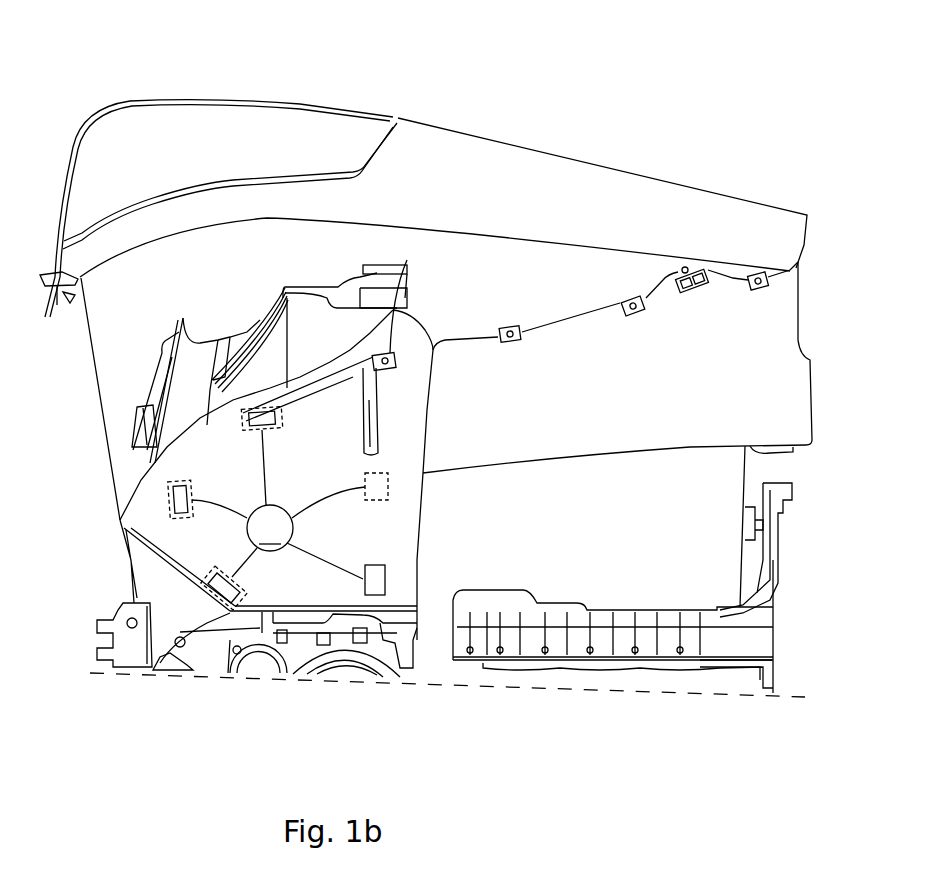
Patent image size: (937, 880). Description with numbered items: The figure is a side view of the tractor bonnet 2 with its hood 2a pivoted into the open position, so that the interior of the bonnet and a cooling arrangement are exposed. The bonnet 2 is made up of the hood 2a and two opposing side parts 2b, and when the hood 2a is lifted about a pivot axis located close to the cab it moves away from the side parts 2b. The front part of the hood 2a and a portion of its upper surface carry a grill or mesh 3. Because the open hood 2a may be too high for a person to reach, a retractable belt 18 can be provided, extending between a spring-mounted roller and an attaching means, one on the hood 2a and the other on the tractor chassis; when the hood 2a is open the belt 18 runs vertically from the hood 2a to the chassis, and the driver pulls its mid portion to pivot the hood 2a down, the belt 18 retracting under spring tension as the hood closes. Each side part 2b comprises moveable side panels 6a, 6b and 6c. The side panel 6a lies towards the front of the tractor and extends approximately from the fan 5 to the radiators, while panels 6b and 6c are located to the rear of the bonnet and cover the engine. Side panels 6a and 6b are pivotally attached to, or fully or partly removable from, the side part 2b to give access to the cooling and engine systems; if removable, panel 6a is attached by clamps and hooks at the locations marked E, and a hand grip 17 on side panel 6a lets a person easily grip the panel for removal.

The bonnet 2 is at (446, 414).
The hood 2a is at (496, 197).
The side part 2b is at (446, 519).
The grill or mesh 3 is at (153, 120).
The fan 5 is at (198, 357).
The side panel 6a is at (244, 481).
The side panel 6b is at (609, 401).
The side panel 6c is at (588, 534).
The hand grip 17 is at (360, 423).
The retractable belt 18 is at (97, 368).